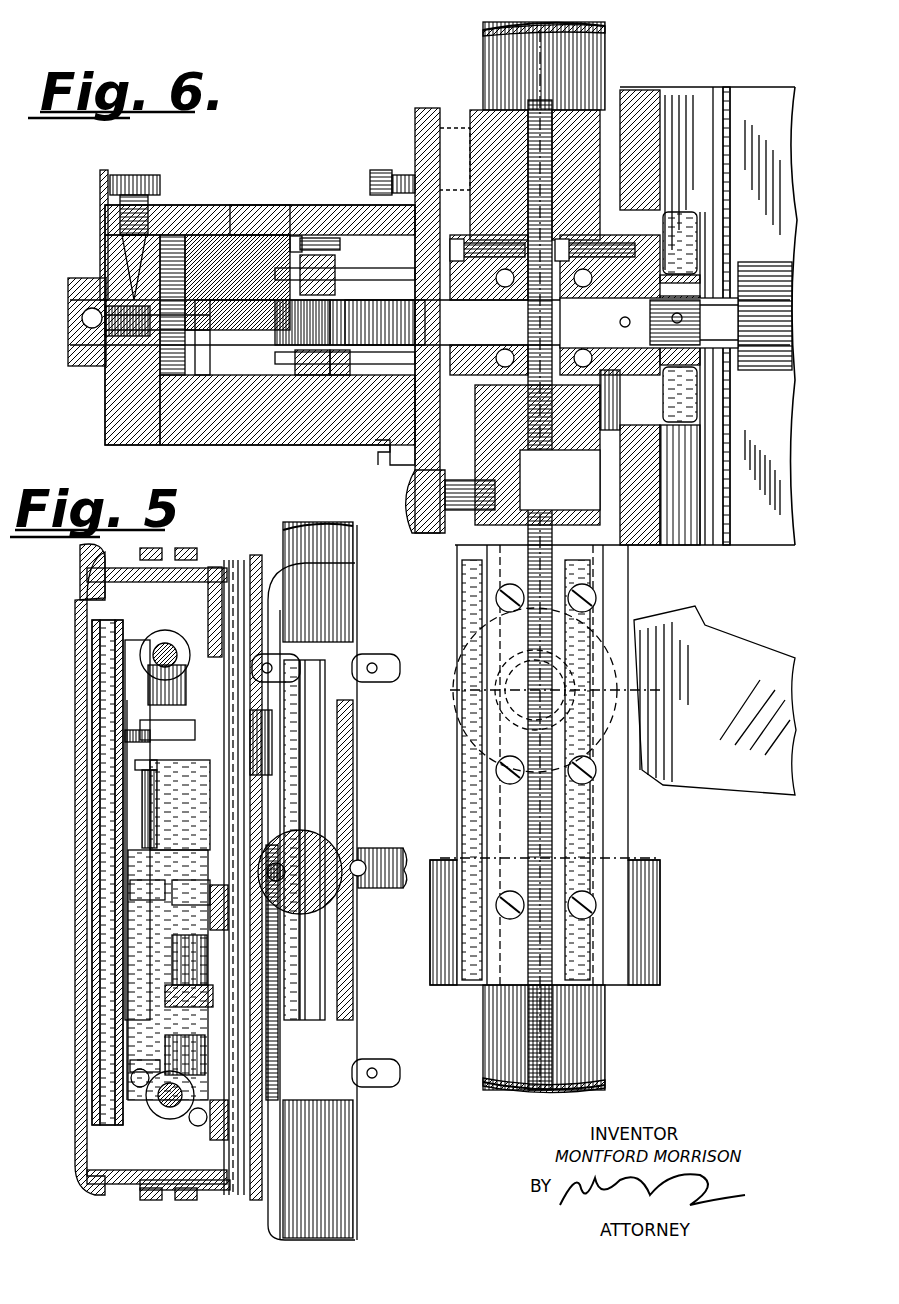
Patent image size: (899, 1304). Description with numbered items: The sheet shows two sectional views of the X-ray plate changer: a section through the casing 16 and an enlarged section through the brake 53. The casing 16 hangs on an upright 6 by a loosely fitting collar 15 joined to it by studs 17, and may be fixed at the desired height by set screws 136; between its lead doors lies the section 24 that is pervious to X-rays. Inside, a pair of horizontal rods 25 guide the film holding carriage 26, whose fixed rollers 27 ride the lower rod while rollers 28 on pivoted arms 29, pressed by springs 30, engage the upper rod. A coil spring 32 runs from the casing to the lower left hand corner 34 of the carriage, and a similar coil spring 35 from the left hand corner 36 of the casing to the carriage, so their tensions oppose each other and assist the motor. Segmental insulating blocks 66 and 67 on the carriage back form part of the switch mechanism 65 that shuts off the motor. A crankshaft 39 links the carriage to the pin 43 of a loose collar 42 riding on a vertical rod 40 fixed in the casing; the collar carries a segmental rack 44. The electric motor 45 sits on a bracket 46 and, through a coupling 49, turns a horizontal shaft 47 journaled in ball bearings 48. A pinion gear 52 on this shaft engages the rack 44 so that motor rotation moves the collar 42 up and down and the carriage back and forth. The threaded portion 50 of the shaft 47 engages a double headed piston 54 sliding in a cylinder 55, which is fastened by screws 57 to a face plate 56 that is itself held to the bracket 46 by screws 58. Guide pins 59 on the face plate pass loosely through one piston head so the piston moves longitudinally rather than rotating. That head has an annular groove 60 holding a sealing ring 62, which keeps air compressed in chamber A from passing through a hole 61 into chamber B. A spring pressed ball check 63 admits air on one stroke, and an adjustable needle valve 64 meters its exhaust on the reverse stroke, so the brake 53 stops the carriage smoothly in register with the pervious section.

In FIG. 5, the upright 6 is at (345, 640).
In FIG. 5, the sleeve or collar 15 is at (368, 760).
In FIG. 5, the casing 16 is at (112, 572).
In FIG. 5, the stud 17 is at (270, 790).
In FIG. 5, the pervious section 24 is at (72, 628).
In FIG. 5, the rod 25 is at (168, 650).
In FIG. 5, the cassette or film holding carriage 26 is at (120, 796).
In FIG. 5, the fixed roller 27 is at (165, 1045).
In FIG. 5, the roller 28 is at (158, 672).
In FIG. 5, the pivoted arm 29 is at (135, 728).
In FIG. 5, the spring 30 is at (142, 822).
In FIG. 5, the coil spring 32 is at (132, 1082).
In FIG. 5, the lower left hand corner 34 is at (135, 1065).
In FIG. 5, the coil spring 35 is at (192, 1126).
In FIG. 5, the left hand corner 36 is at (192, 1122).
In FIG. 6, the crankshaft or link 39 is at (742, 660).
In FIG. 5, the crankshaft or link 39 is at (185, 1005).
In FIG. 6, the vertically extending rod 40 is at (490, 38).
In FIG. 5, the vertically extending rod 40 is at (240, 782).
In FIG. 6, the loose collar 42 is at (630, 835).
In FIG. 5, the loose collar 42 is at (205, 895).
In FIG. 6, the laterally extending pin 43 is at (482, 640).
In FIG. 5, the laterally extending pin 43 is at (195, 890).
In FIG. 6, the segmental rack 44 is at (560, 580).
In FIG. 5, the segmental rack 44 is at (280, 975).
In FIG. 6, the electric motor 45 is at (758, 295).
In FIG. 6, the bracket 46 is at (512, 112).
In FIG. 5, the bracket 46 is at (322, 790).
In FIG. 6, the horizontal shaft 47 is at (395, 347).
In FIG. 5, the horizontal shaft 47 is at (340, 900).
In FIG. 6, the ball bearing 48 is at (447, 290).
In FIG. 6, the coupling 49 is at (650, 298).
In FIG. 6, the threaded portion 50 is at (342, 375).
In FIG. 6, the pinion gear 52 is at (518, 375).
In FIG. 5, the pinion gear 52 is at (280, 866).
In FIG. 6, the brake 53 is at (282, 202).
In FIG. 6, the double headed piston 54 is at (225, 245).
In FIG. 6, the cylinder 55 is at (200, 215).
In FIG. 6, the face plate 56 is at (422, 112).
In FIG. 6, the screw 57 is at (378, 172).
In FIG. 6, the screw 58 is at (422, 515).
In FIG. 6, the guide pin or stud 59 is at (280, 300).
In FIG. 6, the annular groove 60 is at (315, 380).
In FIG. 6, the hole 61 is at (200, 325).
In FIG. 6, the sealing ring 62 is at (312, 262).
In FIG. 6, the spring pressed ball check 63 is at (72, 340).
In FIG. 6, the adjustable needle valve 64 is at (135, 180).
In FIG. 5, the switch mechanism 65 is at (138, 918).
In FIG. 5, the segmental block of insulating material 66 is at (155, 962).
In FIG. 5, the segmental block of insulating material 67 is at (135, 885).
In FIG. 5, the set screw 136 is at (395, 850).
In FIG. 6, the chamber A is at (363, 268).
In FIG. 6, the chamber B is at (172, 300).